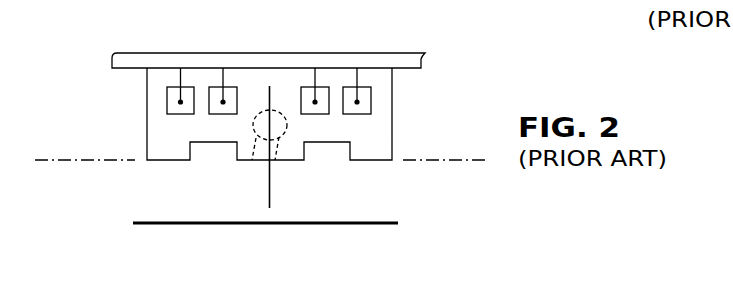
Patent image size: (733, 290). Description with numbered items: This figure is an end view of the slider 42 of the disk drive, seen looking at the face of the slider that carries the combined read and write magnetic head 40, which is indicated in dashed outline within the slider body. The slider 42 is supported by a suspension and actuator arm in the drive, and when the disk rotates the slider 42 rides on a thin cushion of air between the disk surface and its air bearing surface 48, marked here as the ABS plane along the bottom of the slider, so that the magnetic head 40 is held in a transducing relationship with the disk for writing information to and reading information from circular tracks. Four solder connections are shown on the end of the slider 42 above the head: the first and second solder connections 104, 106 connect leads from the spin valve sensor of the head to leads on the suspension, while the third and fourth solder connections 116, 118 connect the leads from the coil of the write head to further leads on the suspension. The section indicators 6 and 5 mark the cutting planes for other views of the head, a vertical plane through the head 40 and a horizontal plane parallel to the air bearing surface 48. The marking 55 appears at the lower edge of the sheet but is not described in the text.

The slider 42 is at (147, 101).
The first solder connection 104 is at (167, 89).
The third solder connection 116 is at (209, 89).
The fourth solder connection 118 is at (301, 88).
The second solder connection 106 is at (343, 88).
The magnetic head 40 is at (253, 167).
The section line 6- 6 is at (284, 95).
The section line 5- 5 is at (153, 238).
The air bearing surface 48 is at (62, 163).
The reference numeral 55 is at (556, 281).